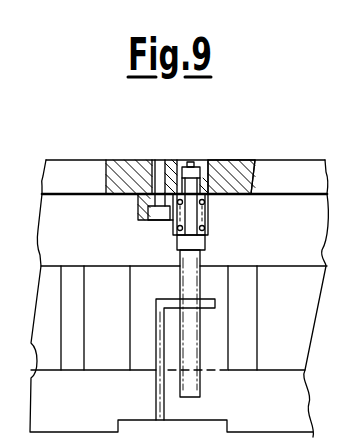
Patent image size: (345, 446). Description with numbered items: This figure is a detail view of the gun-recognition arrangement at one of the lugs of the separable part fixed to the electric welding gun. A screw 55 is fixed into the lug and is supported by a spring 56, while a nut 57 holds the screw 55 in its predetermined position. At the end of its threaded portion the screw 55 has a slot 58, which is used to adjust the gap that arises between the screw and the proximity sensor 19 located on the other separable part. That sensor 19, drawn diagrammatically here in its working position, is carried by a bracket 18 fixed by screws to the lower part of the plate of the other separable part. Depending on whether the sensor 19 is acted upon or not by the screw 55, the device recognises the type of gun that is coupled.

The bracket 18 is at (157, 383).
The proximity sensor 19 is at (193, 385).
The screw 55 is at (188, 213).
The spring 56 is at (210, 206).
The nut 57 is at (207, 166).
The slot 58 is at (191, 162).